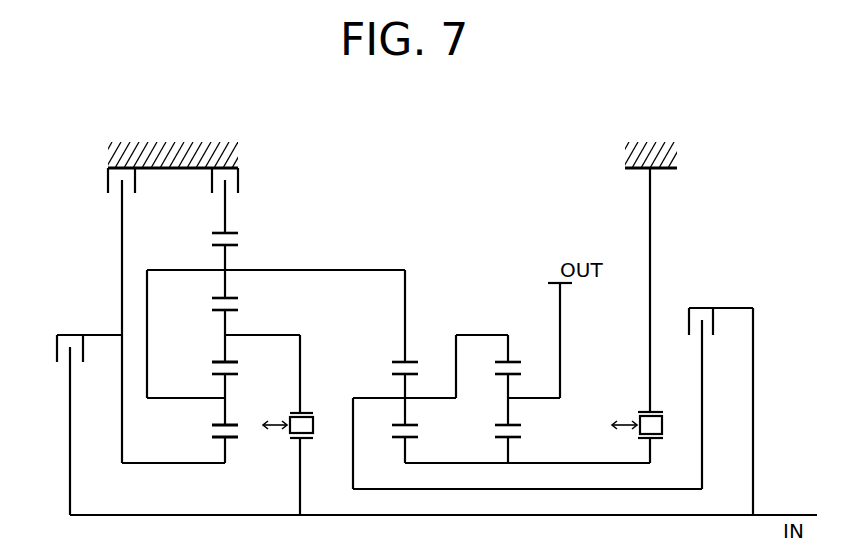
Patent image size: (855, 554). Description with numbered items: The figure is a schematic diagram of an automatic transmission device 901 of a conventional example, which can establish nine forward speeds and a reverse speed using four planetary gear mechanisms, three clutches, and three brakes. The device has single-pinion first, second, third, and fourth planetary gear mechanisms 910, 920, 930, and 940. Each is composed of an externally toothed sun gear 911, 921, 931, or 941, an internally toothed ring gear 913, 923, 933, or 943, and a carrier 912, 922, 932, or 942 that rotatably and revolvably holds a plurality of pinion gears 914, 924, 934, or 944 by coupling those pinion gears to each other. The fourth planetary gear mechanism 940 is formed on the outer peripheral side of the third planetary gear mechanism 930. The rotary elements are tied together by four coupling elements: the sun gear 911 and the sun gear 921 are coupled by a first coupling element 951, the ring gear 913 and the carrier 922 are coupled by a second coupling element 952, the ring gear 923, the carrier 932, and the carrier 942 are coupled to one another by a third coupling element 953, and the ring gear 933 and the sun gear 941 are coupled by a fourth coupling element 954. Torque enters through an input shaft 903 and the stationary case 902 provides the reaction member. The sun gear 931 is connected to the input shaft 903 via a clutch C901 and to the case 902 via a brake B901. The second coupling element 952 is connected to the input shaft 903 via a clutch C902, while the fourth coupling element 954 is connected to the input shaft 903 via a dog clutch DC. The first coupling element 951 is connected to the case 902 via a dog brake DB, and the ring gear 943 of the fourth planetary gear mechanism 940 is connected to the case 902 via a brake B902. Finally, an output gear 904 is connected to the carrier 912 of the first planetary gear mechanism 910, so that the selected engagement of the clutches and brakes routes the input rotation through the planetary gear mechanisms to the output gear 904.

The automatic transmission device 901 is at (498, 127).
The case 902 is at (170, 167).
The input shaft 903 is at (778, 512).
The output gear 904 is at (556, 282).
The first planetary gear mechanism 910 is at (494, 318).
The sun gear 911 is at (513, 438).
The carrier 912 is at (533, 397).
The ring gear 913 is at (517, 360).
The pinion gears 914 is at (513, 423).
The second planetary gear mechanism 920 is at (422, 341).
The sun gear 921 is at (411, 438).
The carrier 922 is at (382, 397).
The ring gear 923 is at (403, 360).
The pinion gears 924 is at (411, 423).
The third planetary gear mechanism 930 is at (250, 444).
The sun gear 931 is at (221, 437).
The carrier 932 is at (210, 402).
The ring gear 933 is at (230, 361).
The pinion gears 934 is at (230, 424).
The fourth planetary gear mechanism 940 is at (259, 232).
The sun gear 941 is at (221, 311).
The carrier 942 is at (247, 268).
The ring gear 943 is at (223, 232).
The pinion gears 944 is at (221, 297).
The first coupling element 951 is at (467, 465).
The second coupling element 952 is at (455, 365).
The third coupling element 953 is at (134, 293).
The fourth coupling element 954 is at (223, 338).
The brake B901 is at (122, 166).
The brake B902 is at (226, 166).
The clutch C901 is at (65, 328).
The clutch C902 is at (697, 305).
The dog clutch DC is at (305, 412).
The dog brake DB is at (647, 411).